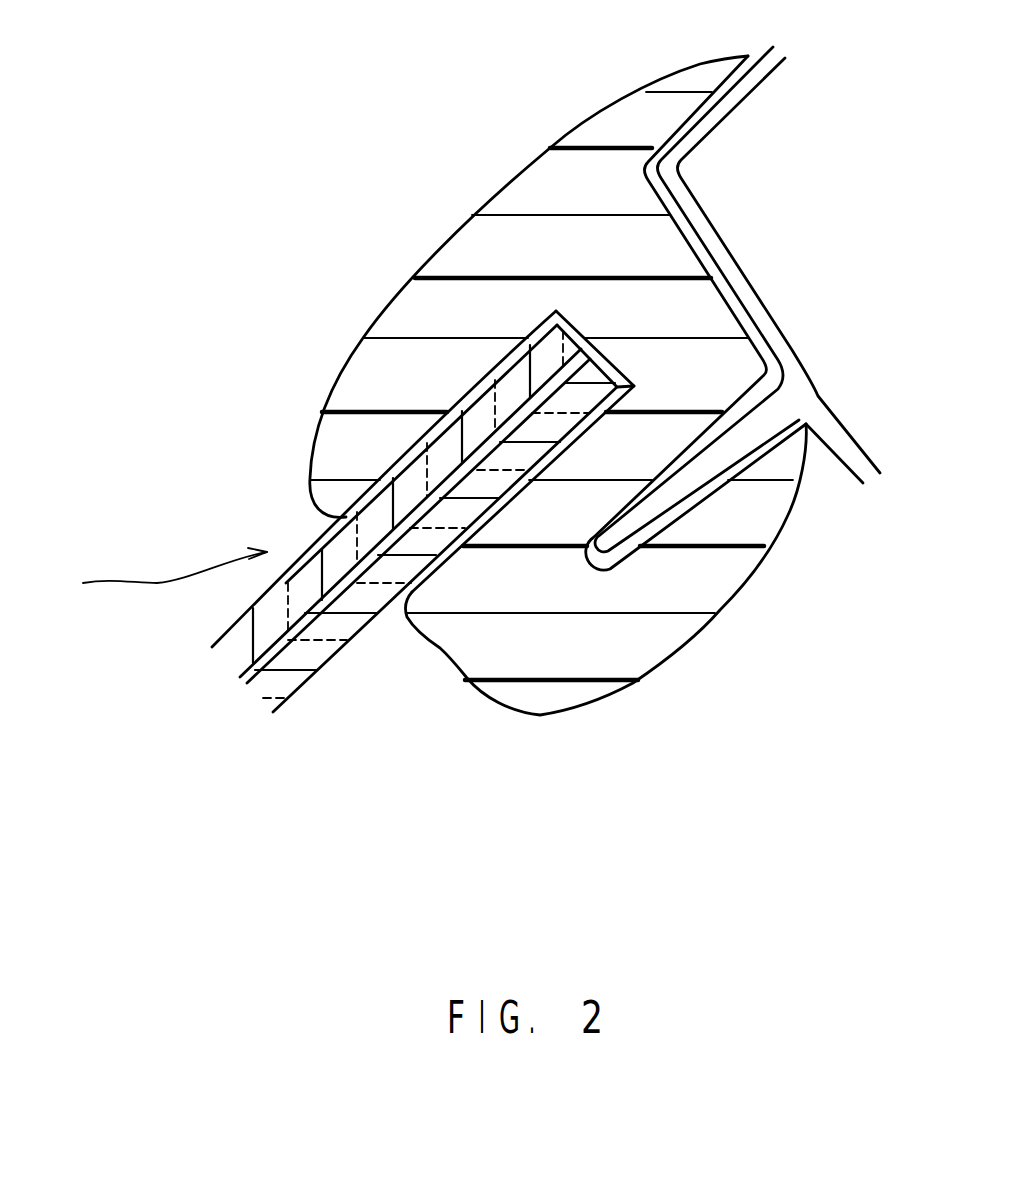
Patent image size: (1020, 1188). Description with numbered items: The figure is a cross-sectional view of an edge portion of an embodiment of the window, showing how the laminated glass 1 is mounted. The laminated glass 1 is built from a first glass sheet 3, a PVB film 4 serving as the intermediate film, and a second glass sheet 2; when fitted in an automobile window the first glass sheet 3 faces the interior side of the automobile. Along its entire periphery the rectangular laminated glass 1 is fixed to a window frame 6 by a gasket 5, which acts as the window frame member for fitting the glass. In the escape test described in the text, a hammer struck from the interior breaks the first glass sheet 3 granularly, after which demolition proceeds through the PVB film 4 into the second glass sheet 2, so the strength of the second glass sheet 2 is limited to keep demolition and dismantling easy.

The laminated glass 1 is at (161, 575).
The second glass sheet 2 is at (242, 629).
The first glass sheet 3 is at (288, 660).
The PVB film 4 is at (307, 622).
The gasket 5 is at (558, 178).
The window frame 6 is at (740, 88).